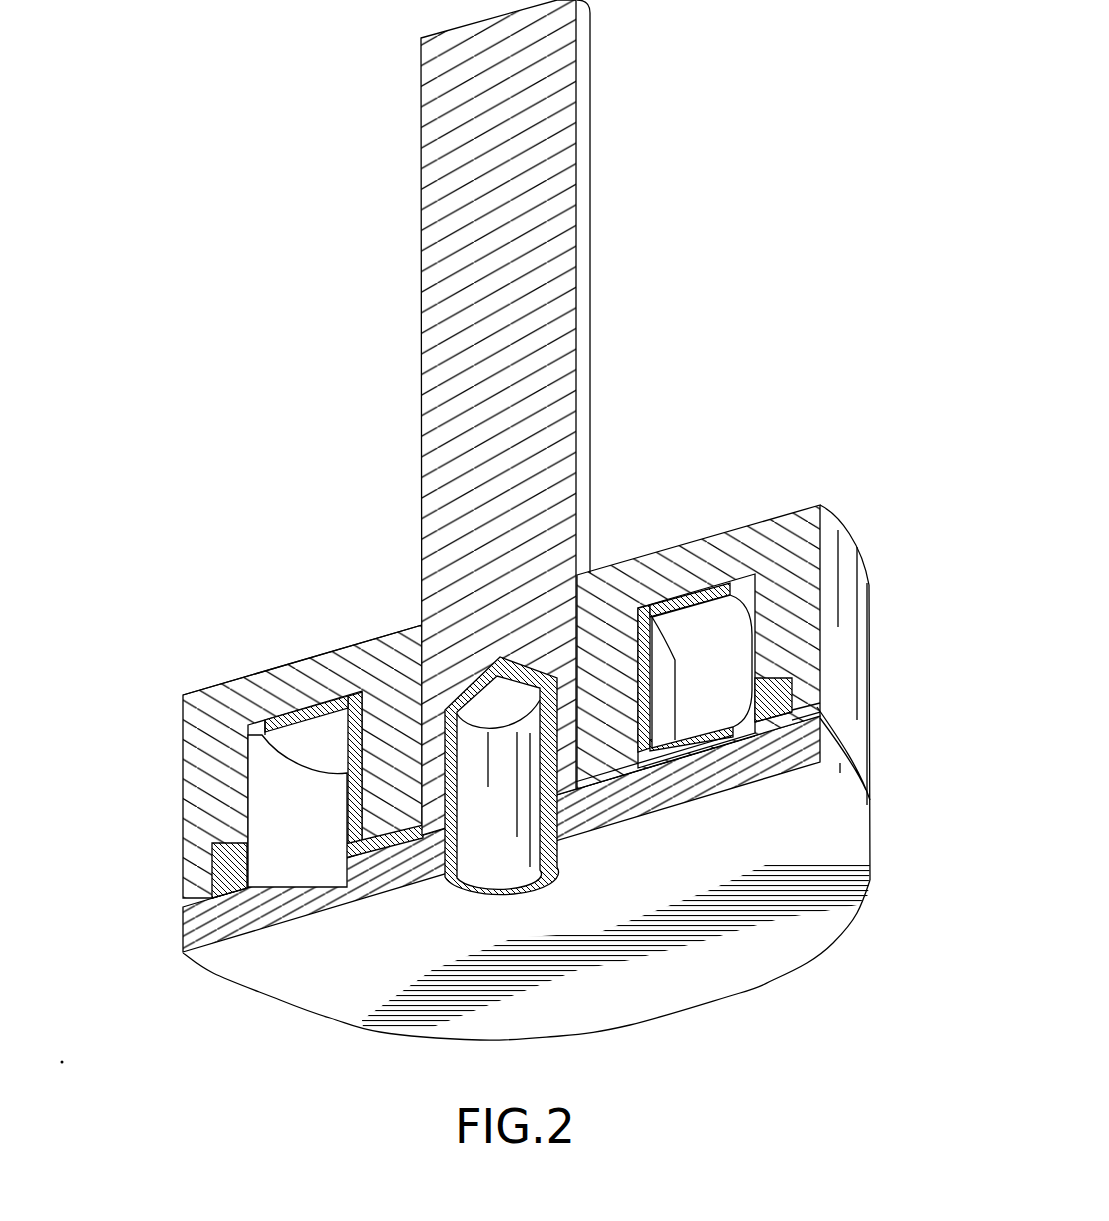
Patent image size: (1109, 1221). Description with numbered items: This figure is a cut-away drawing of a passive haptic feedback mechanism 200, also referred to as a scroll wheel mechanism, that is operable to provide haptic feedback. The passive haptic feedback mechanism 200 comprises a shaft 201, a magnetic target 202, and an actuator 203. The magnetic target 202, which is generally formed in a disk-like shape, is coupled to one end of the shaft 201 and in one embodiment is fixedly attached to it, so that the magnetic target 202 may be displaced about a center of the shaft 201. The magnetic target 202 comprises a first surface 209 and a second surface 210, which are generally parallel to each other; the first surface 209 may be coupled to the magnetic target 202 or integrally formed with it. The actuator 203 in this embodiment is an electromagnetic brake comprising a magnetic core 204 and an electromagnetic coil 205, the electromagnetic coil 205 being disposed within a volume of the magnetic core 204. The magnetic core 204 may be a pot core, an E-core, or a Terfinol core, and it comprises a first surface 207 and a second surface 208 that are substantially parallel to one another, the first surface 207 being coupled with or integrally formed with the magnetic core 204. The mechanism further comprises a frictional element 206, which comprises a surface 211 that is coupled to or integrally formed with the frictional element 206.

The passive haptic feedback mechanism 200 is at (763, 187).
The shaft 201 is at (550, 172).
The magnetic target 202 is at (190, 927).
The actuator 203 is at (865, 533).
The magnetic core 204 is at (210, 697).
The electromagnetic coil 205 is at (270, 720).
The frictional element 206 is at (212, 852).
The first surface 207 is at (388, 833).
The second surface 208 is at (280, 667).
The first surface 209 is at (735, 735).
The second surface 210 is at (720, 783).
The surface 211 is at (208, 940).